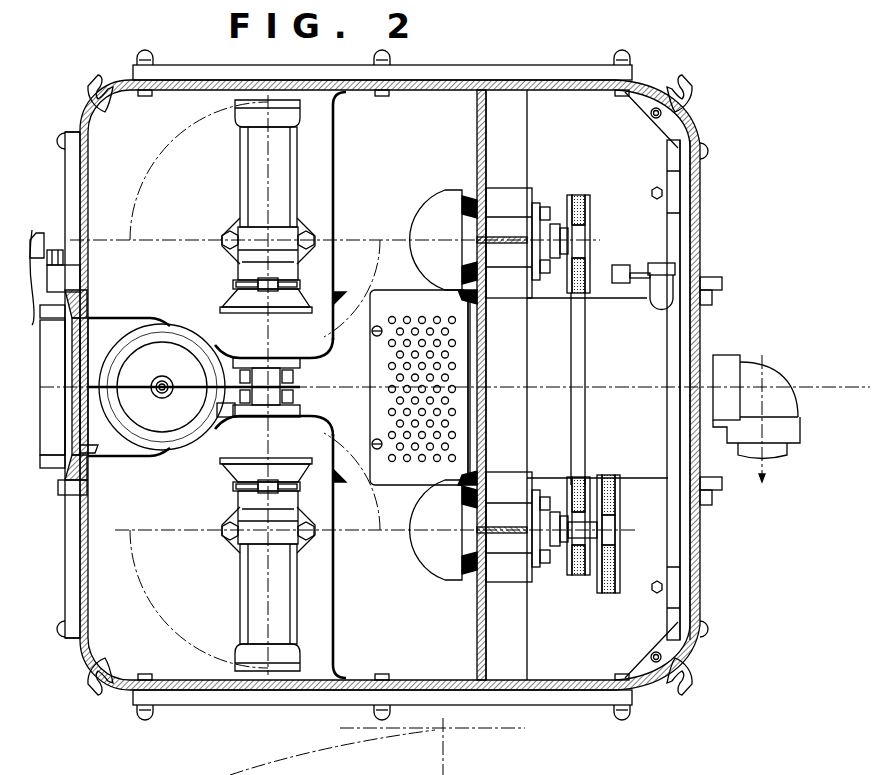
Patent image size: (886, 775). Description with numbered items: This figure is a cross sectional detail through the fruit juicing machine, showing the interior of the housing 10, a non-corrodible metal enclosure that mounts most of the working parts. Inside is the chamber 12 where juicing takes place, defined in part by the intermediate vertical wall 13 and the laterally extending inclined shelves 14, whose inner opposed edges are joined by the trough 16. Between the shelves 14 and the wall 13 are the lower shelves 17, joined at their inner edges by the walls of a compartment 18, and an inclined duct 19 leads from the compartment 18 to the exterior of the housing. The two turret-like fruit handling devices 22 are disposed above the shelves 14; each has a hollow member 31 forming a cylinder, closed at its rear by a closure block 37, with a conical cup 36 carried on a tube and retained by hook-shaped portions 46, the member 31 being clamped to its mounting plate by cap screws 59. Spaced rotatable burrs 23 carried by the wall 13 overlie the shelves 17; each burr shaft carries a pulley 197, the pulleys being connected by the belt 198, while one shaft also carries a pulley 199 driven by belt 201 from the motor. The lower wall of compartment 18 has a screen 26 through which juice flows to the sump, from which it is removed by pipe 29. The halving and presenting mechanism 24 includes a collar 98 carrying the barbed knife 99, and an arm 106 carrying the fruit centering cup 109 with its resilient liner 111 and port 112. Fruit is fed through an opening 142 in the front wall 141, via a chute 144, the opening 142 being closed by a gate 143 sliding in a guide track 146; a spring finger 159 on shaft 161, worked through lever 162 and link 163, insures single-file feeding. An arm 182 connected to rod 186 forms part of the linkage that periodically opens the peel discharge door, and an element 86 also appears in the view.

The housing 10 is at (636, 92).
The chamber 12 is at (190, 283).
The intermediate vertical wall 13 is at (480, 642).
The inclined shelves 14 is at (318, 138).
The trough 16 is at (307, 370).
The lower shelves 17 is at (470, 172).
The compartment 18 is at (392, 305).
The inclined duct 19 is at (637, 470).
The fruit handling devices 22 is at (302, 166).
The rotatable burrs 23 is at (427, 210).
The halving mechanism 24 is at (172, 438).
The screen 26 is at (462, 425).
The pipe 29 is at (733, 356).
The hollow member 31 is at (240, 148).
The conical shaped cup 36 is at (290, 304).
The closure block 37 is at (297, 108).
The hook-shaped portions 46 is at (298, 286).
The cap screws 59 is at (224, 232).
The end plate 86 is at (662, 230).
The collar 98 is at (302, 381).
The knife 99 is at (126, 385).
The arm 106 is at (229, 417).
The fruit centering cup 109 is at (140, 438).
The liner 111 is at (130, 350).
The port 112 is at (160, 378).
The front wall 141 is at (86, 190).
The opening 142 is at (84, 448).
The gate 143 is at (72, 357).
The chute 144 is at (48, 465).
The guide track 146 is at (86, 293).
The finger 159 is at (35, 235).
The shaft 161 is at (62, 348).
The lever 162 is at (78, 268).
The link 163 is at (62, 249).
The arm 182 is at (633, 272).
The rod 186 is at (619, 268).
The pulley 197 is at (585, 197).
The belt 198 is at (582, 361).
The pulley 199 is at (620, 588).
The belt 201 is at (607, 565).